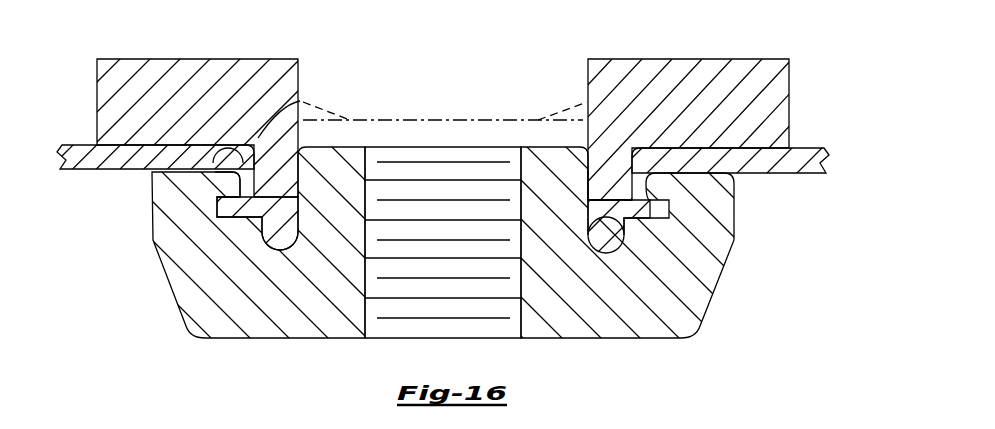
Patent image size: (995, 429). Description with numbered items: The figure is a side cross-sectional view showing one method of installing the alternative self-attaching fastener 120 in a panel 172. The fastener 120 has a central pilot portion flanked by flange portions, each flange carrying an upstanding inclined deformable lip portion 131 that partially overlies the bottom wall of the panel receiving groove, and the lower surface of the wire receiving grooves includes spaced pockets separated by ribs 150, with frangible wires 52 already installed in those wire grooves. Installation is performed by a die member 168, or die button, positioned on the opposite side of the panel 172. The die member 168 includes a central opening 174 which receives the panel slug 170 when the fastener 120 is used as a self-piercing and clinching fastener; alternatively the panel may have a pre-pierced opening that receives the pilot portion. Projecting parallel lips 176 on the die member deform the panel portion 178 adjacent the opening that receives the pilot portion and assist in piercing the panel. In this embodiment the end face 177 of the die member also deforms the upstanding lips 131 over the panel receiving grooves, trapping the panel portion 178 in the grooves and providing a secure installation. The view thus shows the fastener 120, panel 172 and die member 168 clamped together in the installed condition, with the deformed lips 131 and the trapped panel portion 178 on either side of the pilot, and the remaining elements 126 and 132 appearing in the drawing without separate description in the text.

The frangible wires 52 is at (280, 231).
The self-attaching fastener 120 is at (188, 305).
The central member 126 is at (413, 293).
The deformable lip portion 131 is at (225, 185).
The second body 132 is at (645, 340).
The ribs 150 is at (590, 235).
The die member 168 is at (189, 63).
The panel slug 170 is at (458, 133).
The panel 172 is at (117, 166).
The central opening 174 is at (588, 80).
The projecting parallel lips 176 is at (603, 170).
The end face 177 is at (300, 101).
The panel portion 178 is at (648, 212).